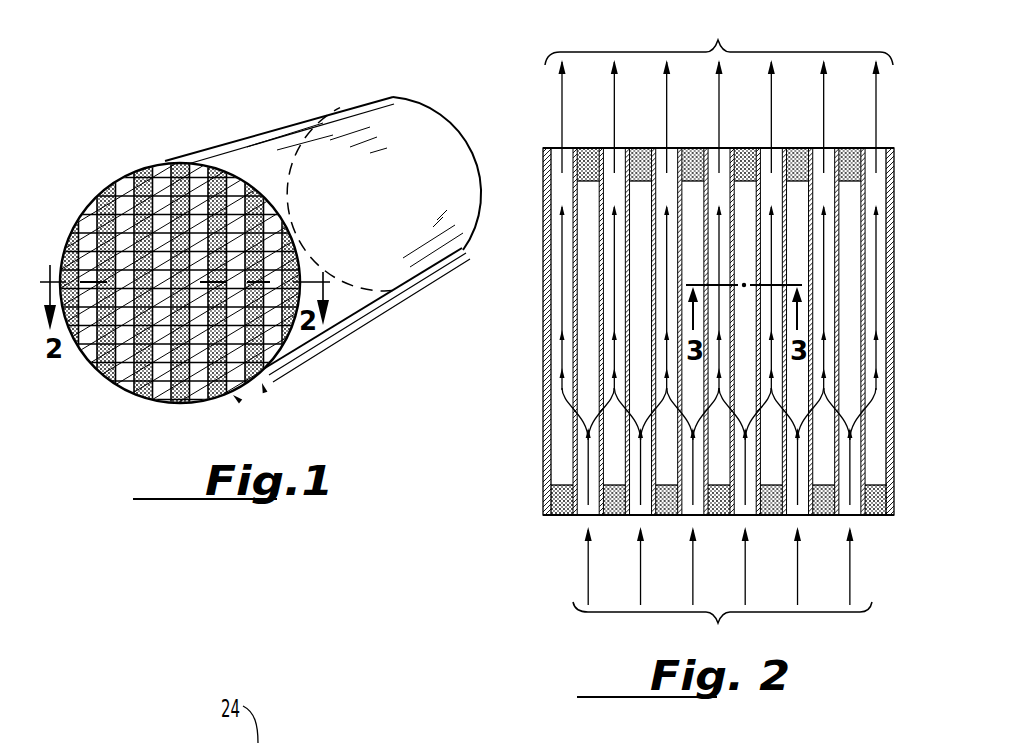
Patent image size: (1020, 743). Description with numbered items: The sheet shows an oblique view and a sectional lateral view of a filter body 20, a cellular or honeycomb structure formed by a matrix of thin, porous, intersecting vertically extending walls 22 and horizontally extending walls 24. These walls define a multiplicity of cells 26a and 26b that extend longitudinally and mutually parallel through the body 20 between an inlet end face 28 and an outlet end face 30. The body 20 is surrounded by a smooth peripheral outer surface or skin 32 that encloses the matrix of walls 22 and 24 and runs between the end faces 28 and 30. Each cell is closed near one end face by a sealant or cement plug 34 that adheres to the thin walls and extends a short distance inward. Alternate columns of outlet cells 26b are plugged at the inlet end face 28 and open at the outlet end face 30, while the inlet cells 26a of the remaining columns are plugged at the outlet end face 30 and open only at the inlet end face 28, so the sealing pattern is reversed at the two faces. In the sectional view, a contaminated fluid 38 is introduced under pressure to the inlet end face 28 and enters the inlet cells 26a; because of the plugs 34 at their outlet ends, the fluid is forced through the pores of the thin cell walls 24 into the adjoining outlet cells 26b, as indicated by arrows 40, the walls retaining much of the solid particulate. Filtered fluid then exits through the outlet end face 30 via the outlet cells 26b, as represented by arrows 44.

In FIG. 1, the filter body 20 is at (284, 273).
In FIG. 2, the filter body 20 is at (705, 344).
In FIG. 1, the vertically extending walls 22 is at (288, 233).
In FIG. 2, the vertically extending walls 22 is at (895, 503).
In FIG. 2, the horizontally extending walls 24 is at (867, 428).
In FIG. 1, the inlet cells 26a is at (228, 200).
In FIG. 2, the inlet cells 26a is at (632, 514).
In FIG. 1, the outlet cells 26b is at (157, 402).
In FIG. 2, the outlet cells 26b is at (882, 250).
In FIG. 1, the inlet end face 28 is at (79, 213).
In FIG. 2, the inlet end face 28 is at (548, 517).
In FIG. 1, the outlet end face 30 is at (481, 207).
In FIG. 2, the outlet end face 30 is at (888, 150).
In FIG. 1, the peripheral outer surface or skin 32 is at (422, 198).
In FIG. 2, the peripheral outer surface or skin 32 is at (895, 303).
In FIG. 1, the plug 34 is at (263, 386).
In FIG. 2, the plug 34 is at (627, 149).
In FIG. 2, the contaminated fluid 38 is at (722, 591).
In FIG. 2, the arrows indicating fluid flow through cell walls 40 is at (597, 418).
In FIG. 2, the arrows representing filtered fluid exit 44 is at (719, 90).